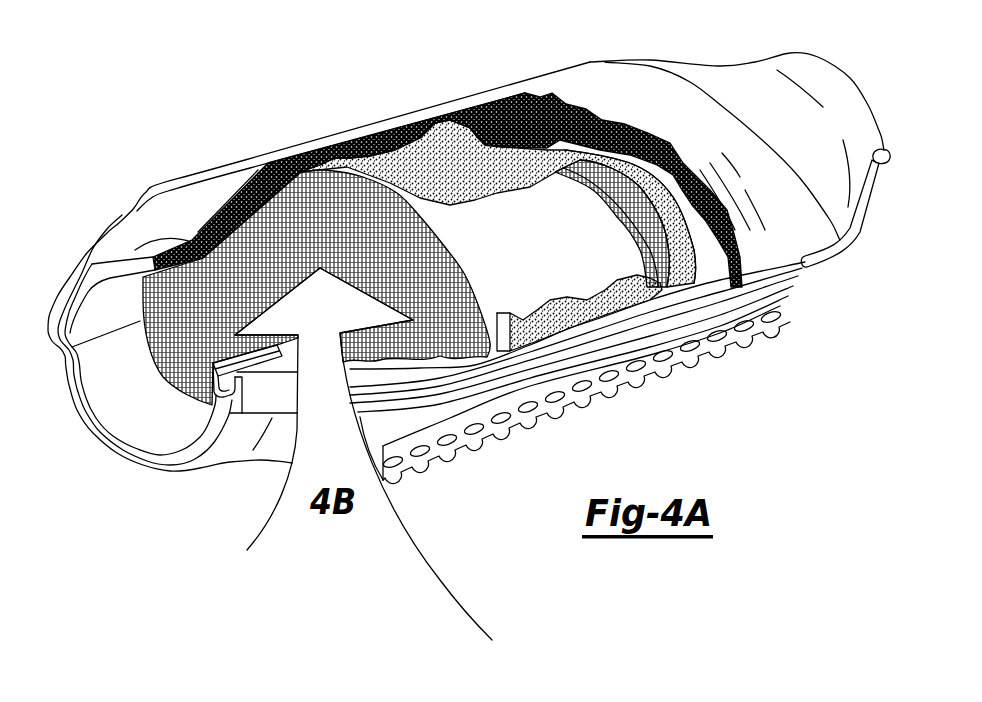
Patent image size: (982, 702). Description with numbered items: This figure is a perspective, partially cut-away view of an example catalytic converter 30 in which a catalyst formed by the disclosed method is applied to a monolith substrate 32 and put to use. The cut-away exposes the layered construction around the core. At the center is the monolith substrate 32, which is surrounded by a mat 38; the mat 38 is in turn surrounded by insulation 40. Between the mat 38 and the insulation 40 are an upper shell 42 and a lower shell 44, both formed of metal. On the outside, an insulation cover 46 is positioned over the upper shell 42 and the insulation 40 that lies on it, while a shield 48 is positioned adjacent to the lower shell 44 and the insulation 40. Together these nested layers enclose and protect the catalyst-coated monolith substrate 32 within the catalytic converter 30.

The catalytic converter 30 is at (147, 128).
The monolith substrate 32 is at (640, 383).
The mat 38 is at (397, 157).
The insulation 40 is at (500, 100).
The upper shell 42 is at (706, 267).
The lower shell 44 is at (433, 420).
The insulation cover 46 is at (598, 78).
The shield 48 is at (696, 363).